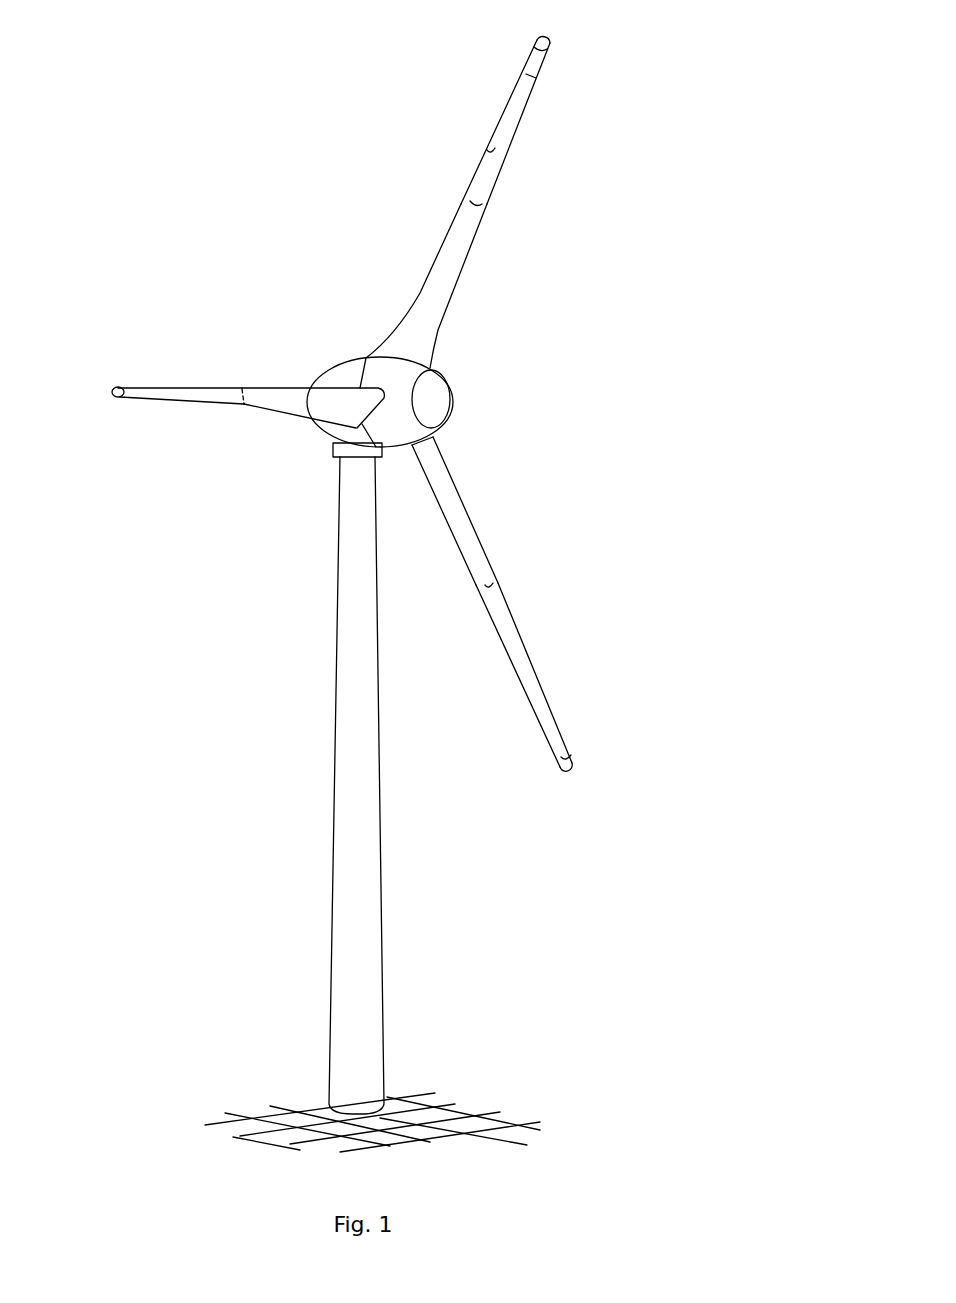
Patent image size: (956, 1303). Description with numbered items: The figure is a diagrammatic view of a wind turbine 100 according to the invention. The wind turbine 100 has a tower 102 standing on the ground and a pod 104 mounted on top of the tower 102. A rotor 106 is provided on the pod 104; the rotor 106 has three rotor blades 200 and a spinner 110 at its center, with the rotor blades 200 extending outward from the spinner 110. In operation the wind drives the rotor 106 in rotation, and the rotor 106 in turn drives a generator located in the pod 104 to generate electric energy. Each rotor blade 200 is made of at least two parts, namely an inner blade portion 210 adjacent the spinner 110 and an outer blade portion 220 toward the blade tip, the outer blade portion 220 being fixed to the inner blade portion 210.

The wind turbine 100 is at (295, 525).
The tower 102 is at (365, 888).
The pod 104 is at (345, 372).
The rotor 106 is at (518, 325).
The spinner 110 is at (437, 400).
The rotor blade 200 is at (182, 392).
The inner blade portion 210 is at (283, 400).
The outer blade portion 220 is at (138, 393).